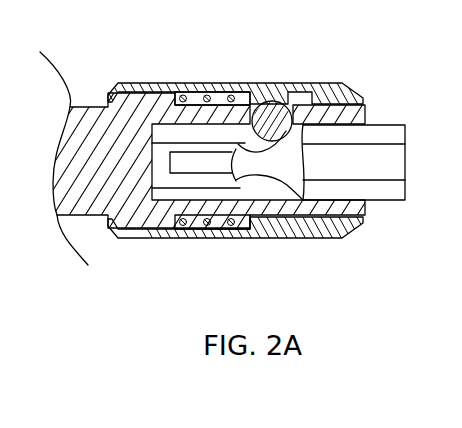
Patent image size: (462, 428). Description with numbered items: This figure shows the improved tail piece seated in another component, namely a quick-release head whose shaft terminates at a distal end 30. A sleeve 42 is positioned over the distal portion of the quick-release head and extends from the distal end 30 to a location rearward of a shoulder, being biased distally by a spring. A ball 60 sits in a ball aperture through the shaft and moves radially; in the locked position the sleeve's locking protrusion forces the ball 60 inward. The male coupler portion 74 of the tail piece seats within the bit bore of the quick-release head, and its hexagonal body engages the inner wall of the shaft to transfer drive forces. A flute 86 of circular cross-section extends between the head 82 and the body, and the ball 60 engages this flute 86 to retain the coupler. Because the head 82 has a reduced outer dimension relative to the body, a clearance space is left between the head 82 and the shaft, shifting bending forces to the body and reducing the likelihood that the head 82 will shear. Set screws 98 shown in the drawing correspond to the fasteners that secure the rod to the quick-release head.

The distal end 30 is at (368, 208).
The sleeve 42 is at (352, 88).
The ball 60 is at (299, 83).
The male coupler portion 74 is at (377, 130).
The head 82 is at (188, 168).
The flute 86 is at (263, 172).
The fasteners 98 is at (208, 137).